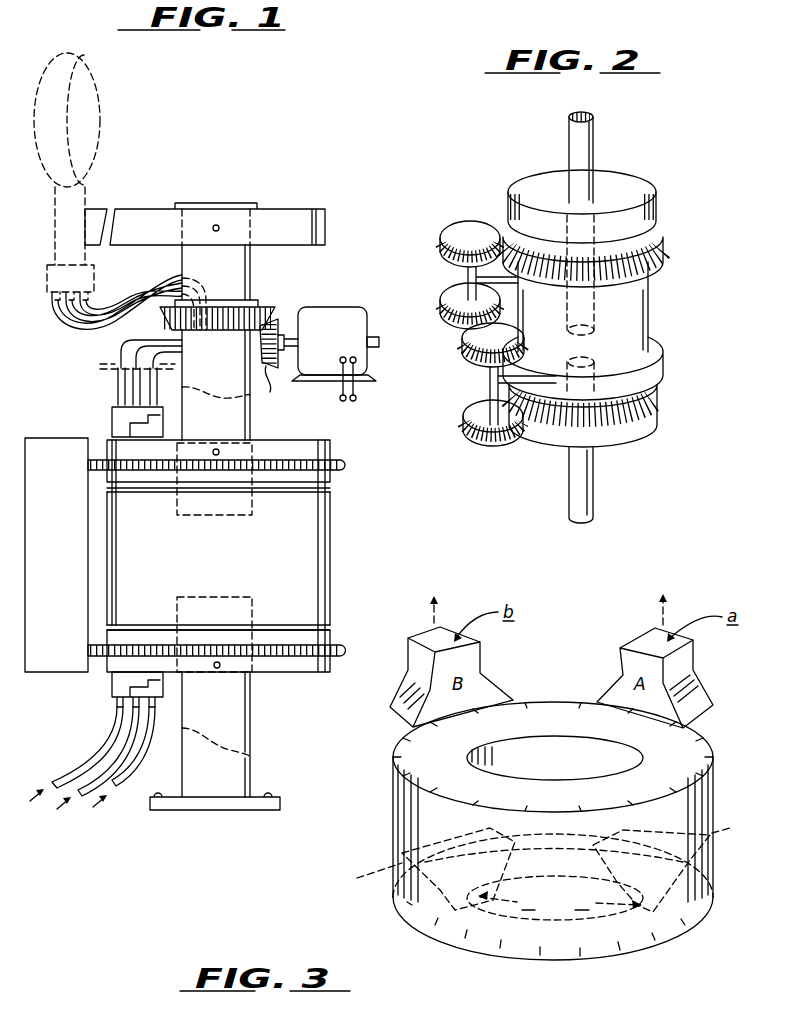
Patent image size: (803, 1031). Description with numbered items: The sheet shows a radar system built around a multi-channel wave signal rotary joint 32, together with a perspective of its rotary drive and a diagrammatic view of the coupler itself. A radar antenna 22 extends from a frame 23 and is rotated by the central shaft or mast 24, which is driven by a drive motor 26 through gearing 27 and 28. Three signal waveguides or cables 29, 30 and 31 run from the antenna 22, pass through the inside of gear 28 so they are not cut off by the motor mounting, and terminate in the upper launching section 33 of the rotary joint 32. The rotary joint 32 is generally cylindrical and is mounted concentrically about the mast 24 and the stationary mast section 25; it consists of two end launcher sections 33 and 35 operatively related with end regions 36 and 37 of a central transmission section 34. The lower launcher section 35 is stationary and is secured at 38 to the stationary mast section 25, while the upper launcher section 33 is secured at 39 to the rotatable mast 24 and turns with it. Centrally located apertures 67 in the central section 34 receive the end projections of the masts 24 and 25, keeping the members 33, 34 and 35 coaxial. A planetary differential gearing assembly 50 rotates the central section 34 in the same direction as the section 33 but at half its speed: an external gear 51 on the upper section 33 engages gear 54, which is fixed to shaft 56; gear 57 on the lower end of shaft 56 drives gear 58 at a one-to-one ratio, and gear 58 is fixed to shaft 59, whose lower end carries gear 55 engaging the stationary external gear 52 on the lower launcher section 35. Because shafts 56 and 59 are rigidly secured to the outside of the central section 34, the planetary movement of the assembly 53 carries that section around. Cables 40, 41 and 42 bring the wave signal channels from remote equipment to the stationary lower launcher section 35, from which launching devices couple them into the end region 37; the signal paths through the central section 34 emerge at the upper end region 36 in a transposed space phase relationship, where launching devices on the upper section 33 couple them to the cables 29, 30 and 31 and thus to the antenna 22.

In FIG. 1, the radar antenna 22 is at (100, 117).
In FIG. 1, the frame 23 is at (293, 217).
In FIG. 1, the central shaft or mast 24 is at (250, 267).
In FIG. 2, the central shaft or mast 24 is at (594, 146).
In FIG. 1, the stationary mast section 25 is at (252, 770).
In FIG. 2, the stationary mast section 25 is at (594, 494).
In FIG. 1, the drive motor 26 is at (345, 339).
In FIG. 1, the gearing 27 is at (280, 387).
In FIG. 1, the gear 28 is at (265, 306).
In FIG. 1, the signal waveguide or cable 29 is at (120, 375).
In FIG. 1, the signal waveguide or cable 30 is at (136, 386).
In FIG. 1, the signal waveguide or cable 31 is at (152, 394).
In FIG. 1, the rotary joint 32 is at (234, 558).
In FIG. 3, the rotary joint 32 is at (544, 840).
In FIG. 1, the upper launching section 33 is at (312, 440).
In FIG. 2, the upper launching section 33 is at (637, 196).
In FIG. 1, the central transmission section 34 is at (320, 558).
In FIG. 2, the central transmission section 34 is at (648, 313).
In FIG. 1, the lower launching section 35 is at (330, 640).
In FIG. 2, the lower launching section 35 is at (647, 423).
In FIG. 1, the upper end region 36 is at (330, 490).
In FIG. 3, the upper end region 36 is at (713, 760).
In FIG. 1, the lower end region 37 is at (305, 628).
In FIG. 3, the lower end region 37 is at (665, 947).
In FIG. 1, the securing point 38 is at (217, 668).
In FIG. 1, the securing point 39 is at (217, 449).
In FIG. 1, the waveguide or cable 40 is at (113, 729).
In FIG. 1, the waveguide or cable 41 is at (110, 748).
In FIG. 1, the waveguide or cable 42 is at (132, 771).
In FIG. 1, the planetary differential gearing assembly 50 is at (53, 450).
In FIG. 2, the planetary differential gearing assembly 50 is at (579, 317).
In FIG. 1, the external gear 51 is at (345, 466).
In FIG. 2, the external gear 51 is at (663, 243).
In FIG. 1, the external gear 52 is at (345, 650).
In FIG. 2, the external gear 52 is at (664, 380).
In FIG. 2, the planetary assembly 53 is at (458, 333).
In FIG. 2, the gear 54 is at (438, 252).
In FIG. 2, the gear 55 is at (463, 427).
In FIG. 2, the shaft 56 is at (465, 275).
In FIG. 2, the gear 57 is at (445, 318).
In FIG. 2, the gear 58 is at (462, 349).
In FIG. 2, the shaft 59 is at (490, 383).
In FIG. 1, the centrally located aperture 67 is at (218, 515).